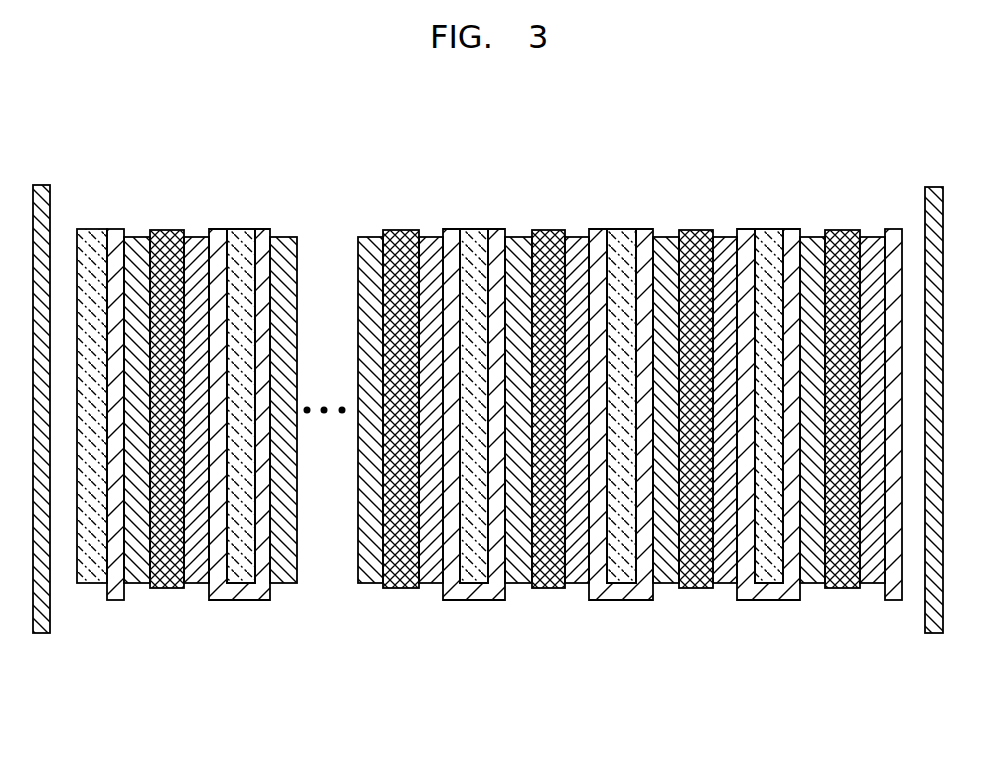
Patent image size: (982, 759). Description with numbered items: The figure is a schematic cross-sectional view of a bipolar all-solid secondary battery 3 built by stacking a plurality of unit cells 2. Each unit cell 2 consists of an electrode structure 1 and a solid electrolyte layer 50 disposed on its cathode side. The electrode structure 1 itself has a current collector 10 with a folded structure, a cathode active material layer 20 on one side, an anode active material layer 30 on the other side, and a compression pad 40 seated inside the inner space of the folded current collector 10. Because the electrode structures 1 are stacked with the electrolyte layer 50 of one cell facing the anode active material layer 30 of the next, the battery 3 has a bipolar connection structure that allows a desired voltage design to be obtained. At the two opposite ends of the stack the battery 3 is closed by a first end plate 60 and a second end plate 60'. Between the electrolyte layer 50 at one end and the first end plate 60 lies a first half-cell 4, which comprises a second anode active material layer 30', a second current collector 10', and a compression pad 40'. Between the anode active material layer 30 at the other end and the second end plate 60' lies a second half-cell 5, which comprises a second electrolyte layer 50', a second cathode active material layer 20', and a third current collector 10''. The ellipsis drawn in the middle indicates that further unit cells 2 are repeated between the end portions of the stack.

The electrode structure 1 is at (517, 173).
The unit cell 2 is at (373, 137).
The all-solid secondary battery 3 is at (936, 684).
The first half-cell 4 is at (157, 171).
The second half-cell 5 is at (833, 151).
The current collector 10 is at (502, 376).
The second current collector 10' is at (117, 387).
The third current collector 10'' is at (903, 377).
The cathode active material layer 20 is at (458, 379).
The second cathode active material layer 20' is at (867, 382).
The anode active material layer 30 is at (547, 379).
The second anode active material layer 30' is at (145, 379).
The compression pad 40 is at (507, 379).
The compression pad 40' is at (82, 379).
The solid electrolyte layer 50 is at (431, 360).
The second electrolyte layer 50' is at (842, 371).
The first end plate 60 is at (42, 383).
The second end plate 60' is at (930, 381).